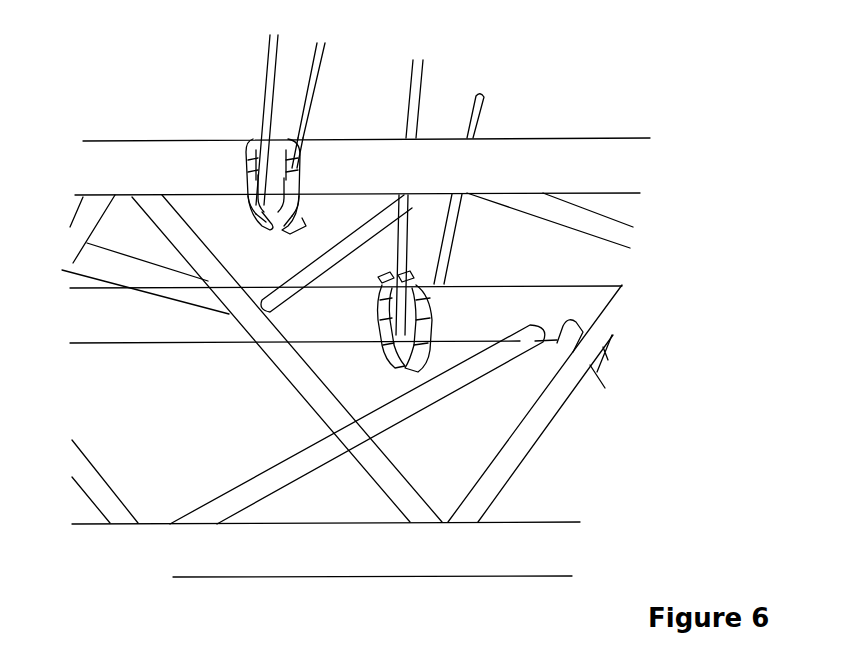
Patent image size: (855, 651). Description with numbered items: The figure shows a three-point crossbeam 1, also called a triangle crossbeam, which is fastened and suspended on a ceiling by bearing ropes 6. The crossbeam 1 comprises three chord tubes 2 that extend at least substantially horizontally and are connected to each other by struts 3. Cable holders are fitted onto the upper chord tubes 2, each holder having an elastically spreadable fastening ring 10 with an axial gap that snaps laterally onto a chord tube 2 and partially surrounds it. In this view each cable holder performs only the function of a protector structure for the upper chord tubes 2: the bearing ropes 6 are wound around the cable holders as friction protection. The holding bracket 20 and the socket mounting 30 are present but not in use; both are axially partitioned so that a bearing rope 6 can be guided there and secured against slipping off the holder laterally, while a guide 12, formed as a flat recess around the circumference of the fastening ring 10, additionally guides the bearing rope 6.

The three-point crossbeam 1 is at (135, 88).
The chord tube 2 is at (172, 162).
The strut 3 is at (112, 263).
The bearing rope 6 is at (320, 60).
The fastening ring 10 is at (255, 152).
The guide 12 is at (278, 147).
The holding bracket 20 is at (260, 213).
The socket mounting 30 is at (425, 267).